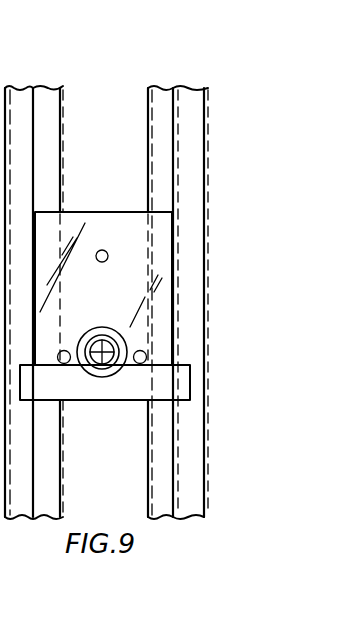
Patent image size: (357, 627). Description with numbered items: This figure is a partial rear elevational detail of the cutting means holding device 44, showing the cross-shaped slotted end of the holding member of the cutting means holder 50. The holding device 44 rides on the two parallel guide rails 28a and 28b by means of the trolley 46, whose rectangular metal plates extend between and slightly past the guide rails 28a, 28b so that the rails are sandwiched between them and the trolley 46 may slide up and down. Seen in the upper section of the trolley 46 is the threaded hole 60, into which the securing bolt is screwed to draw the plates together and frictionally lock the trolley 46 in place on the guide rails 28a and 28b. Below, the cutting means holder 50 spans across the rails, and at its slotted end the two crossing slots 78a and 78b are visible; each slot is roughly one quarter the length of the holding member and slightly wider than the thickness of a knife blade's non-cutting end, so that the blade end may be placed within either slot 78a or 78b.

The guide rail 28a is at (167, 100).
The guide rail 28b is at (50, 104).
The cutting means holding device 44 is at (103, 198).
The trolley 46 is at (128, 230).
The cutting means holder 50 is at (84, 365).
The threaded hole 60 is at (108, 256).
The slot 78a is at (112, 348).
The slot 78b is at (108, 366).